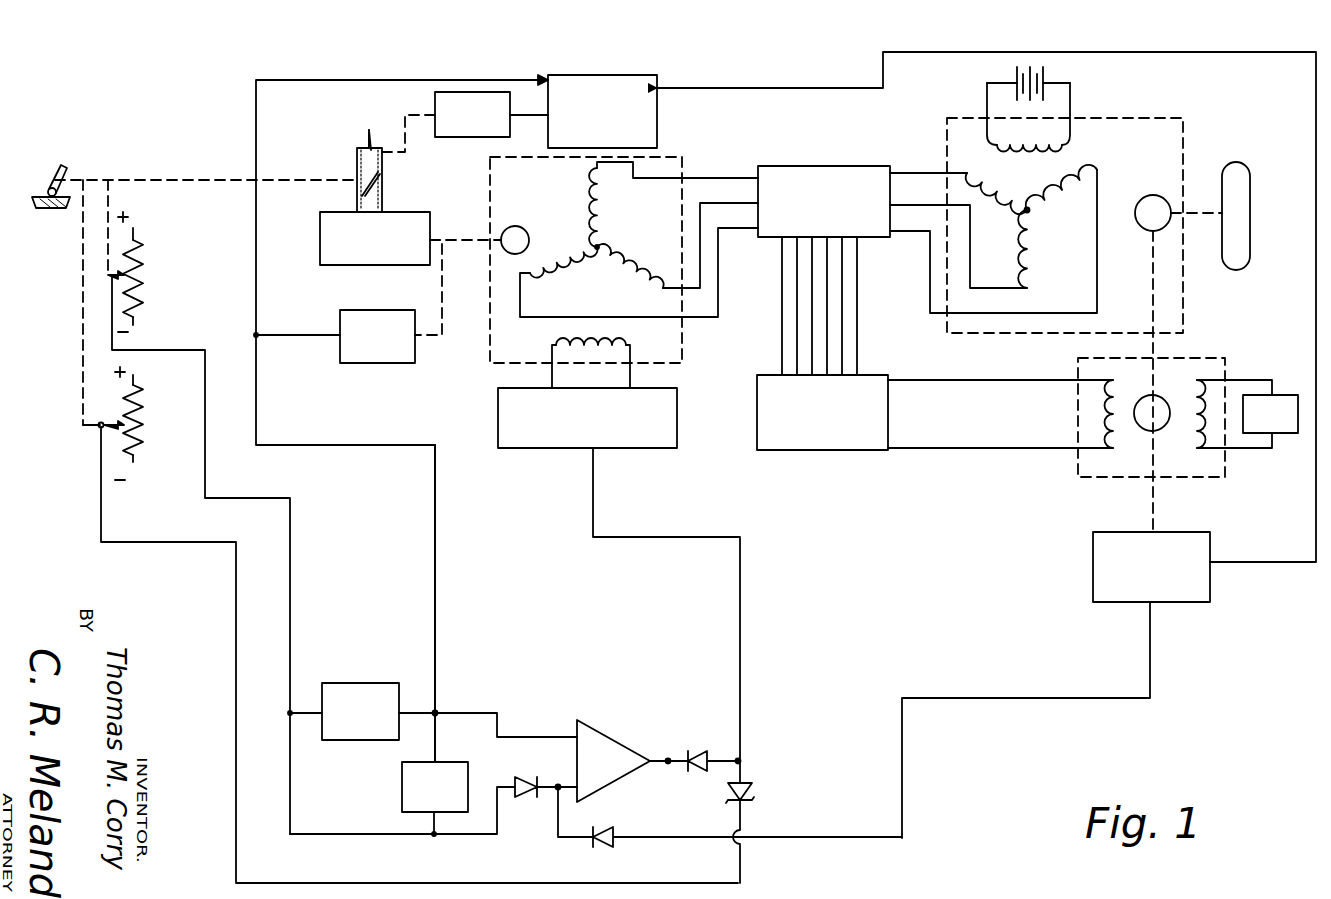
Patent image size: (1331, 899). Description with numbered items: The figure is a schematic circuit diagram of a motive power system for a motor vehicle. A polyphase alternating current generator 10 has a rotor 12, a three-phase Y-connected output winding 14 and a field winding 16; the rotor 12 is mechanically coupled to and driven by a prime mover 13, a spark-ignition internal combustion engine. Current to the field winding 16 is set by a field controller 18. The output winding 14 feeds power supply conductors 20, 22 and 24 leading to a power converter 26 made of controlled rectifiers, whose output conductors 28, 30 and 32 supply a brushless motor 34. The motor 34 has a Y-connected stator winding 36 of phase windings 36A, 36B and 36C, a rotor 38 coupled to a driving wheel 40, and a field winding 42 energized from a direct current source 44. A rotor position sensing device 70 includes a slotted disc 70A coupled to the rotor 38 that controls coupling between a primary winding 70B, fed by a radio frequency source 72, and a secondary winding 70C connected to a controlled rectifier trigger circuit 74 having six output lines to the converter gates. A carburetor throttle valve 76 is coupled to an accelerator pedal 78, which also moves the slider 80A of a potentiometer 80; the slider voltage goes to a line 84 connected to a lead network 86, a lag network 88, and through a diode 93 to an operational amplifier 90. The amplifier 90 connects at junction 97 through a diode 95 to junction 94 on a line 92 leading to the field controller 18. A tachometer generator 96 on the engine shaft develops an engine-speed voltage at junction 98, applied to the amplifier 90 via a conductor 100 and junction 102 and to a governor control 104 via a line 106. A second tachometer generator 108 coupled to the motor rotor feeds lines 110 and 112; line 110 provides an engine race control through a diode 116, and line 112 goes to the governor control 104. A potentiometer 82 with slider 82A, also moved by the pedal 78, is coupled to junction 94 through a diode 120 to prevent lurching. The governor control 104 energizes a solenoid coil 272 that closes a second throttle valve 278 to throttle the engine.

The polyphase alternating current generator 10 is at (685, 158).
The rotor 12 is at (522, 227).
The prime mover 13 is at (320, 234).
The output winding 14 is at (602, 253).
The field winding 16 is at (630, 337).
The field controller 18 is at (498, 406).
The power supply conductor 20 is at (742, 178).
The power supply conductor 22 is at (703, 290).
The power supply conductor 24 is at (741, 228).
The power converter 26 is at (843, 165).
The power supply conductor 28 is at (920, 172).
The power supply conductor 30 is at (902, 205).
The power supply conductor 32 is at (906, 233).
The brushless motor 34 is at (1100, 118).
The stator winding 36 is at (1037, 213).
The phase winding 36A is at (1000, 195).
The phase winding 36B is at (1060, 198).
The phase winding 36C is at (1036, 272).
The rotor 38 is at (1153, 195).
The driving wheel 40 is at (1250, 206).
The field winding 42 is at (1013, 150).
The source of direct current 44 is at (1017, 82).
The rotor position sensing device 70 is at (1080, 405).
The disc 70A is at (1165, 398).
The primary winding 70B is at (1190, 430).
The secondary winding 70C is at (1122, 430).
The source of radio frequency signals 72 is at (1283, 395).
The controlled rectifier trigger circuit 74 is at (757, 432).
The carburetor throttle valve 76 is at (383, 185).
The accelerator pedal 78 is at (64, 166).
The potentiometer 80 is at (142, 282).
The slider 80A is at (110, 272).
The potentiometer 82 is at (133, 463).
The slider 82A is at (104, 424).
The line 84 is at (292, 556).
The lead network 86 is at (377, 683).
The lag network 88 is at (402, 784).
The operational amplifier 90 is at (622, 744).
The line 92 is at (742, 625).
The diode 93 is at (526, 797).
The junction 94 is at (741, 761).
The diode 95 is at (697, 752).
The tachometer generator 96 is at (397, 363).
The junction 97 is at (670, 766).
The junction 98 is at (257, 335).
The conductor 100 is at (436, 570).
The junction 102 is at (437, 712).
The governor control 104 is at (622, 74).
The line 106 is at (258, 120).
The tachometer generator 108 is at (1175, 603).
The line 110 is at (988, 698).
The line 112 is at (1305, 565).
The diode 116 is at (606, 830).
The diode 120 is at (752, 792).
The solenoid coil 272 is at (480, 137).
The throttle valve 278 is at (371, 146).